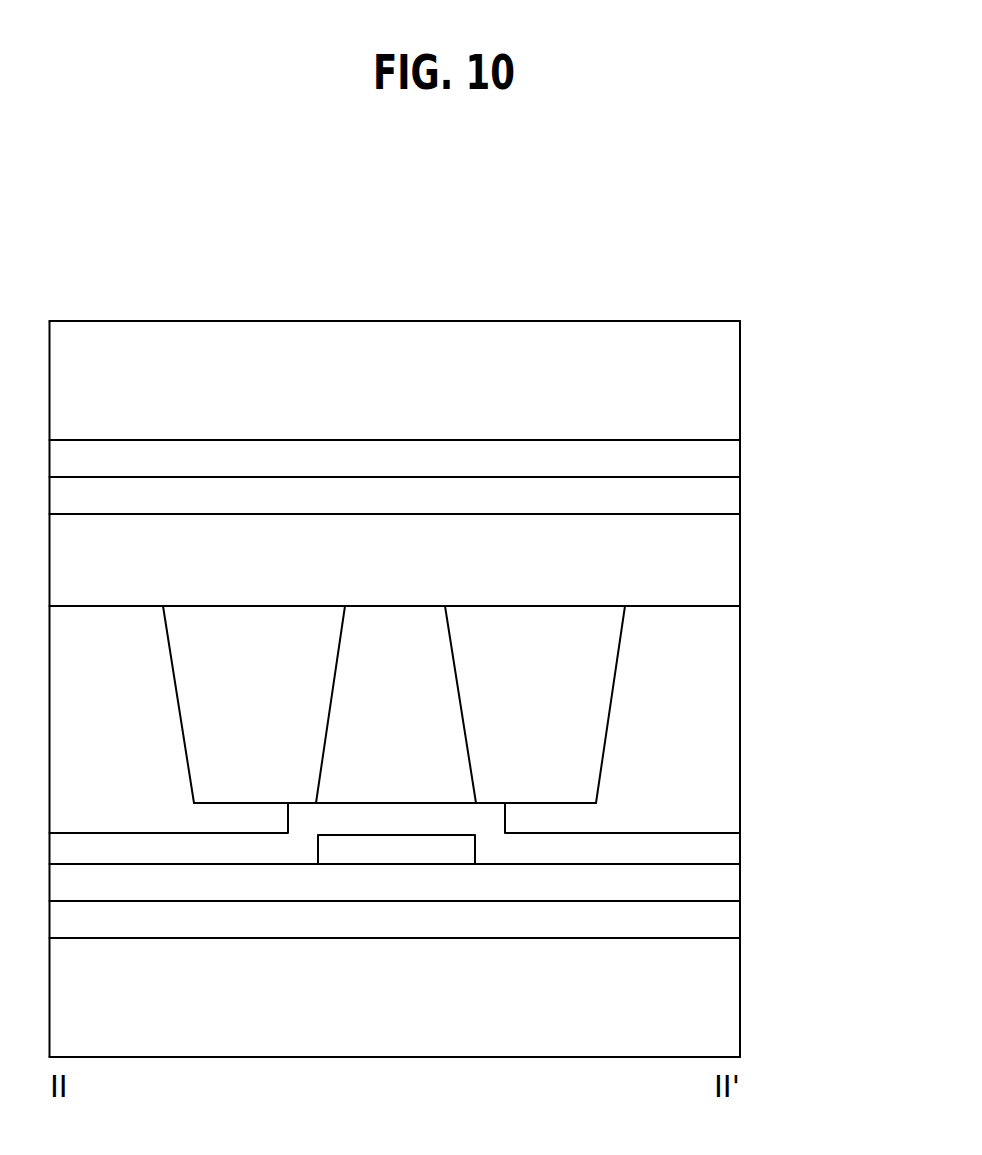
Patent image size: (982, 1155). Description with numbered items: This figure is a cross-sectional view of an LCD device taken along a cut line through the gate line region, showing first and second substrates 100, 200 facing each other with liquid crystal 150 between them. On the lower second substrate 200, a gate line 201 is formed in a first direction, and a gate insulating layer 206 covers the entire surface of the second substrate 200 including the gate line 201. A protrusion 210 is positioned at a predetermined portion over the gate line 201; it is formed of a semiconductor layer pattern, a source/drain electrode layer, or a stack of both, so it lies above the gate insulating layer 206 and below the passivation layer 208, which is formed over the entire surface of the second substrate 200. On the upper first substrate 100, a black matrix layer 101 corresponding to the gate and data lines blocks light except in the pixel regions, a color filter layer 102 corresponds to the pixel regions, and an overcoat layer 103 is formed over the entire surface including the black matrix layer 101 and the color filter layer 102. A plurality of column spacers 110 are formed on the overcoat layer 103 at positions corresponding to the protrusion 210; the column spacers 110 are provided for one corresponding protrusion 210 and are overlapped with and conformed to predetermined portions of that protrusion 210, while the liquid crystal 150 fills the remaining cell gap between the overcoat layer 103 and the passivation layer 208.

The first substrate 100 is at (722, 383).
The black matrix layer 101 is at (722, 463).
The color filter layer 102 is at (722, 497).
The overcoat layer 103 is at (722, 560).
The liquid crystal 150 is at (722, 721).
The column spacers 110 is at (473, 685).
The passivation layer 208 is at (722, 850).
The gate insulating layer 206 is at (722, 885).
The gate line 201 is at (722, 925).
The second substrate 200 is at (722, 989).
The protrusion 210 is at (399, 848).